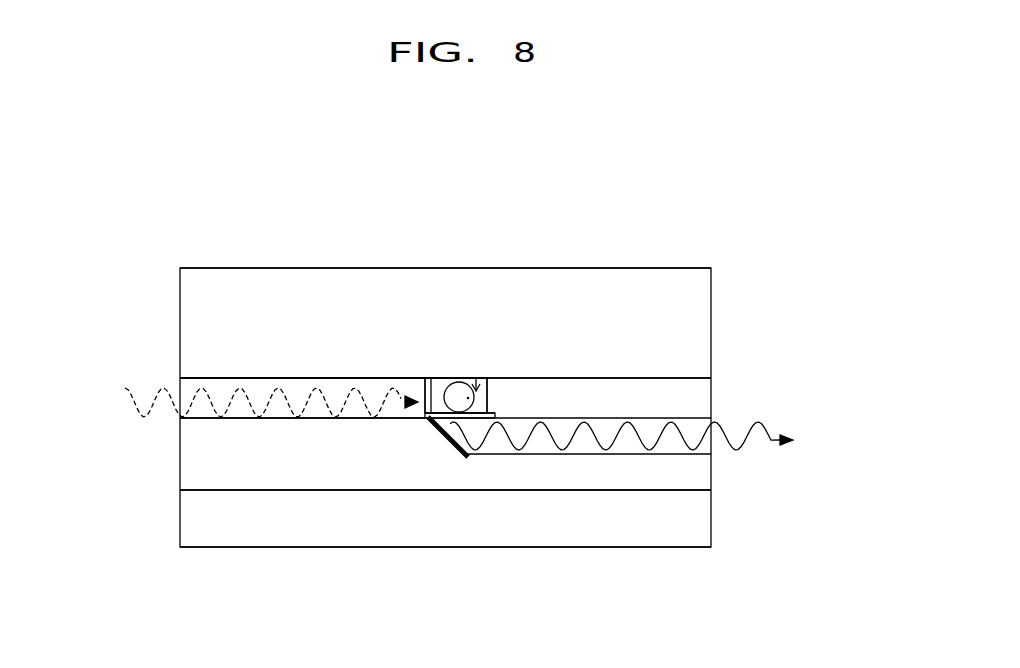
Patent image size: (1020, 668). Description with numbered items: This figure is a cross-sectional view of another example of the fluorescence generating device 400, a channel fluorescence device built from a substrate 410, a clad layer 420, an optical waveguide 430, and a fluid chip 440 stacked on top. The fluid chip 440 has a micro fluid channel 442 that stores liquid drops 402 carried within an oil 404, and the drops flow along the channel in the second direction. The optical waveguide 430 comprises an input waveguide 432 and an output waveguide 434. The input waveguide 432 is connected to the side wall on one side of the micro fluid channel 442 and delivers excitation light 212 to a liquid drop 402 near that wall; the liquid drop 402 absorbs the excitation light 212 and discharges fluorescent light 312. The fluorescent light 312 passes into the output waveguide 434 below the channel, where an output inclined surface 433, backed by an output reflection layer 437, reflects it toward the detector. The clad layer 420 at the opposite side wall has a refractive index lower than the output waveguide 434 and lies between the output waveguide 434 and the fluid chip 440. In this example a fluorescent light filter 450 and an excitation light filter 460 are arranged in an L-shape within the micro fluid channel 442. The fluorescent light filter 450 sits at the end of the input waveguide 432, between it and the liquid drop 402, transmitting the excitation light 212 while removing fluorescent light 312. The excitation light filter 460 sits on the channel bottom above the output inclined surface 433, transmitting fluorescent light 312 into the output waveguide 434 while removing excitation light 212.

The fluorescence generating device 400 is at (735, 162).
The fluid chip 440 is at (698, 323).
The clad layer 420 is at (698, 398).
The substrate 410 is at (698, 520).
The excitation light 212 is at (251, 395).
The fluorescent light 312 is at (662, 432).
The optical waveguide 430 is at (354, 514).
The input waveguide 432 is at (352, 410).
The output waveguide 434 is at (485, 418).
The fluorescent light filter 450 is at (424, 380).
The micro fluid channel 442 is at (437, 382).
The output inclined surface 433 is at (450, 383).
The oil 404 is at (476, 378).
The liquid drop 402 is at (468, 398).
The output reflection layer 437 is at (440, 436).
The excitation light filter 460 is at (491, 421).